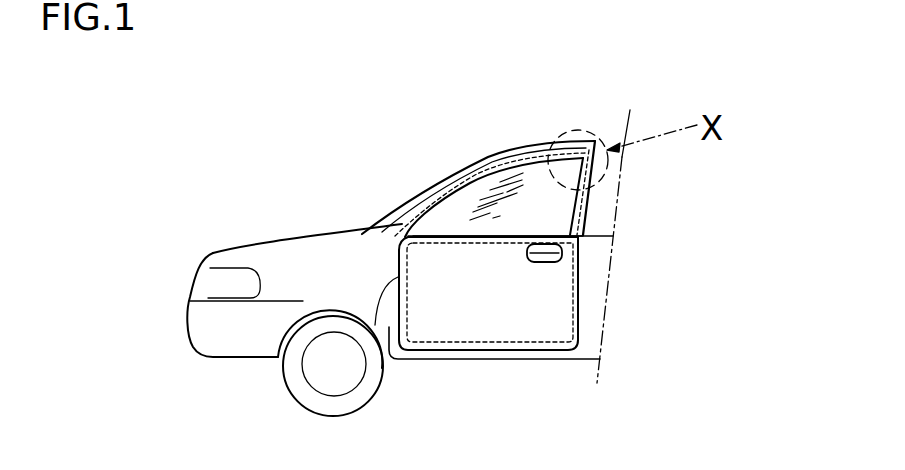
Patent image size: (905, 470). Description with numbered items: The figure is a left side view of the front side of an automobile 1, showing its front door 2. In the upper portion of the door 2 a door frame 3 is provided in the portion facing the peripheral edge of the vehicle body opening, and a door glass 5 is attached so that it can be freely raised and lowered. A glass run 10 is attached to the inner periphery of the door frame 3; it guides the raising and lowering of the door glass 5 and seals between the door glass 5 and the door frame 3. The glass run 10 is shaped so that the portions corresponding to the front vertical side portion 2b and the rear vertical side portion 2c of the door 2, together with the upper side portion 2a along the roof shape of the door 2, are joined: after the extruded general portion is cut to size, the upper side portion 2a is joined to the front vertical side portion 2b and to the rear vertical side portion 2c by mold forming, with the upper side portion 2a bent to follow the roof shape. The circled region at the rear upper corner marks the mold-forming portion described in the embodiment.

The automobile 1 is at (220, 235).
The door 2 is at (487, 310).
The upper side portion 2a is at (522, 160).
The front vertical side portion 2b is at (382, 368).
The rear vertical side portion 2c is at (578, 277).
The door frame 3 is at (572, 157).
The door glass 5 is at (452, 228).
The glass run 10 is at (490, 175).